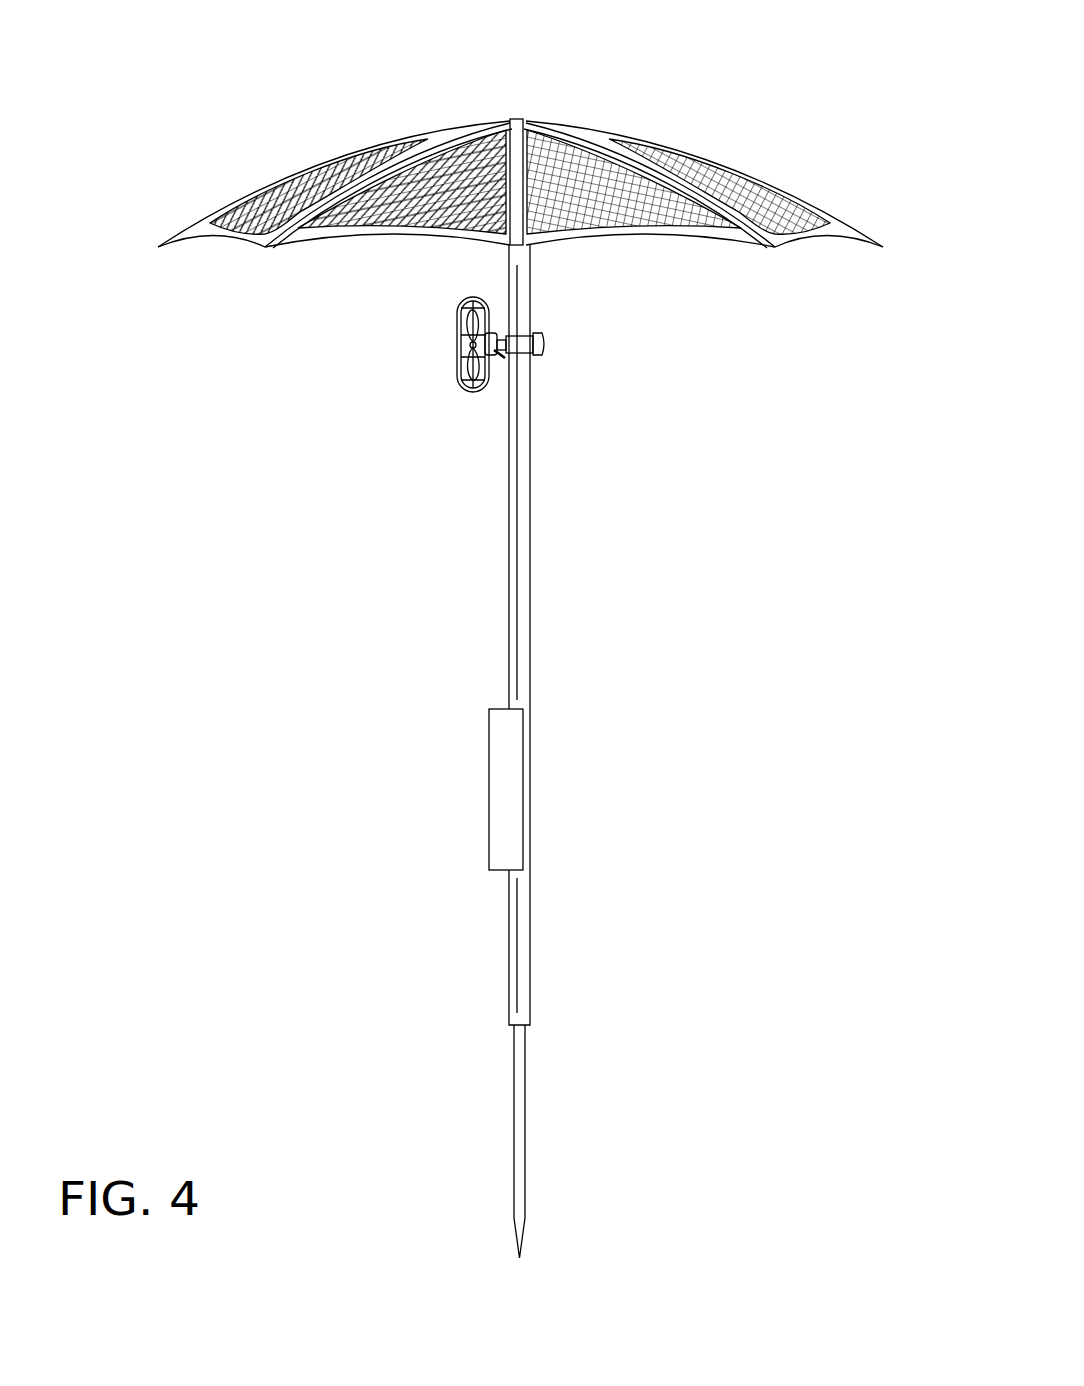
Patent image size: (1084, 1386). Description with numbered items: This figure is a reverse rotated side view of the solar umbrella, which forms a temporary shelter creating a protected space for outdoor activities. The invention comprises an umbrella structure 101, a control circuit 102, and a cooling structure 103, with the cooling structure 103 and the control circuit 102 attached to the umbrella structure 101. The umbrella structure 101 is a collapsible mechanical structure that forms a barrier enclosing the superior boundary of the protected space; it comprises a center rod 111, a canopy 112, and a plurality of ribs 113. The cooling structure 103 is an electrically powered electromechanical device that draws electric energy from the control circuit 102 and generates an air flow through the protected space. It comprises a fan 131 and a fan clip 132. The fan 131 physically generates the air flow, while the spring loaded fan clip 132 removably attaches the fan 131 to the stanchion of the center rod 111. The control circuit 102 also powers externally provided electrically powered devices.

The umbrella structure 101 is at (284, 125).
The control circuit 102 is at (497, 840).
The cooling structure 103 is at (592, 399).
The center rod 111 is at (540, 636).
The canopy 112 is at (770, 158).
The ribs 113 is at (843, 218).
The fan 131 is at (466, 393).
The fan clip 132 is at (555, 345).